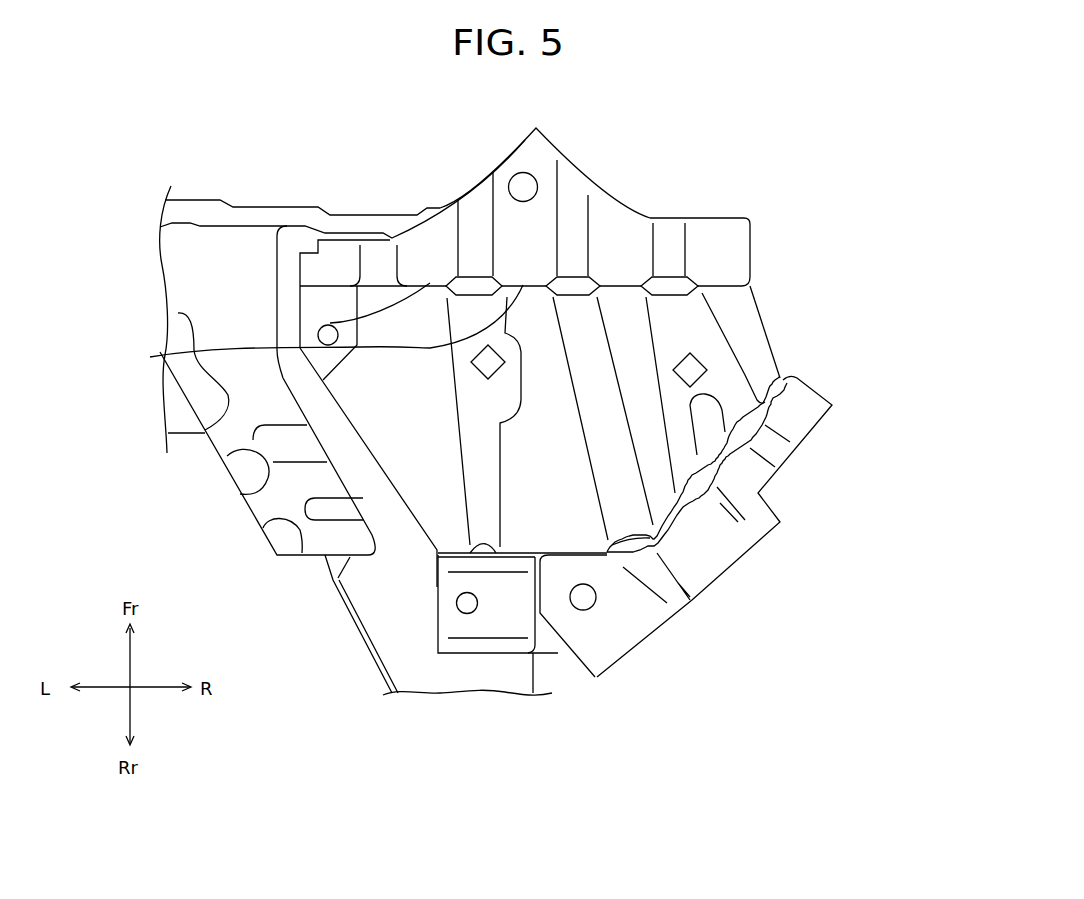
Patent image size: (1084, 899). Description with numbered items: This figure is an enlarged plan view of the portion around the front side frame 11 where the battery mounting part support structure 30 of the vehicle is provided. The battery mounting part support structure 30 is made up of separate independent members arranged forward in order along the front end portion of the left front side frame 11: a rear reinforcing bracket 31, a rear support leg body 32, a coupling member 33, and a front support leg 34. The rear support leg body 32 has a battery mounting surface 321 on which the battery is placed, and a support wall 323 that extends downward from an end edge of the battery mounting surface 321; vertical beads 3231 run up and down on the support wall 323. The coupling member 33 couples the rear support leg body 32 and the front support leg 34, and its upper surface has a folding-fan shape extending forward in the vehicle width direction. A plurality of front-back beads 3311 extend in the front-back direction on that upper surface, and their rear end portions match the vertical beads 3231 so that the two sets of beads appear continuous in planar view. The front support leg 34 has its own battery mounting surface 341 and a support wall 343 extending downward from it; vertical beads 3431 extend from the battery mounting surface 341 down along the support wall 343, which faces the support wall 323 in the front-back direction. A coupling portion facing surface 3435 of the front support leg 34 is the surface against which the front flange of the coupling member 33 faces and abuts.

The front side frame 11 is at (483, 673).
The battery mounting part support structure 30 is at (860, 370).
The rear reinforcing bracket 31 is at (405, 606).
The rear support leg body 32 is at (800, 478).
The coupling member 33 is at (773, 316).
The front support leg 34 is at (768, 236).
The battery mounting surface 321 is at (680, 587).
The support wall 323 is at (585, 538).
The battery mounting surface 341 is at (507, 220).
The support wall 343 is at (335, 323).
The vertical beads 3231 is at (655, 550).
The front-back beads 3311 is at (607, 399).
The vertical beads 3431 is at (567, 287).
The coupling portion facing surface 3435 is at (160, 352).